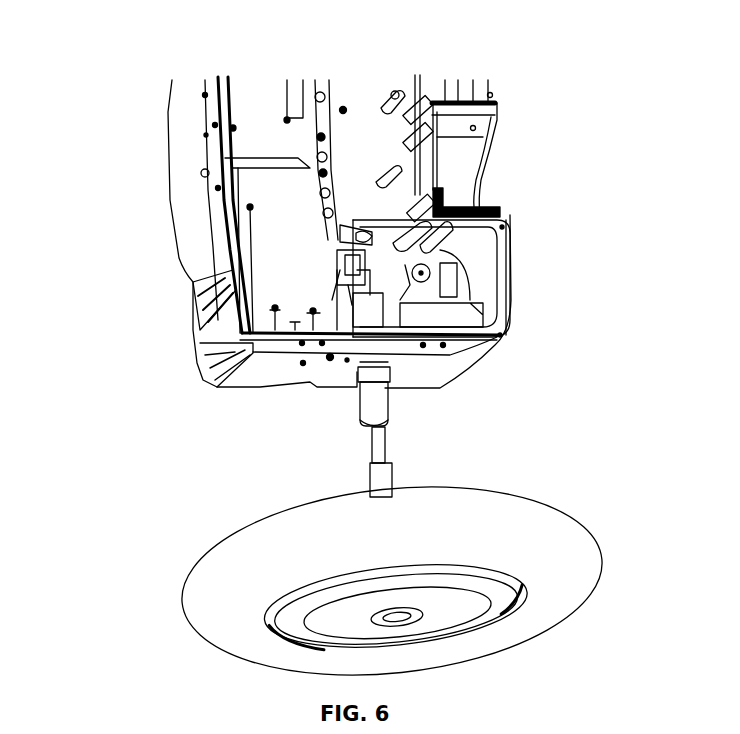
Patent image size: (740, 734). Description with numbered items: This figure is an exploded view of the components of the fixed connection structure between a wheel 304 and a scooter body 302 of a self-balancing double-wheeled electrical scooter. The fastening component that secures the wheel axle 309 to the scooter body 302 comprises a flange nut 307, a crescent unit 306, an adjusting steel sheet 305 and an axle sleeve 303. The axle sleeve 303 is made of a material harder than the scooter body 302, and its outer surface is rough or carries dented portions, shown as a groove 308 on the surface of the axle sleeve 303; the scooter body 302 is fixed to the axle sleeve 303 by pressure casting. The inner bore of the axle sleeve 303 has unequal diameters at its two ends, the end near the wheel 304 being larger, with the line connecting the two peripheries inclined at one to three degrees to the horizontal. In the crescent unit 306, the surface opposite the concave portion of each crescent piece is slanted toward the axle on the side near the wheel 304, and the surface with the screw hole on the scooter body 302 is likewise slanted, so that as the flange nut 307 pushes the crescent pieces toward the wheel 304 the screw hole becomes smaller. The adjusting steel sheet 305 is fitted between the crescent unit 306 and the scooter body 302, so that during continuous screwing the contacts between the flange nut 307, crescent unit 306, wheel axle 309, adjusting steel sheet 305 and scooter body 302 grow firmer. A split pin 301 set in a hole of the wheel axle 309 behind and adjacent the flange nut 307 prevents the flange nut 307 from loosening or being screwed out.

The split pin 301 is at (412, 206).
The scooter body 302 is at (533, 264).
The axle sleeve 303 is at (420, 405).
The wheel 304 is at (189, 588).
The adjusting steel sheet 305 is at (328, 297).
The crescent unit 306 is at (315, 263).
The flange nut 307 is at (338, 226).
The groove on the surface of the axle sleeve 308 is at (408, 372).
The wheel axle 309 is at (408, 478).